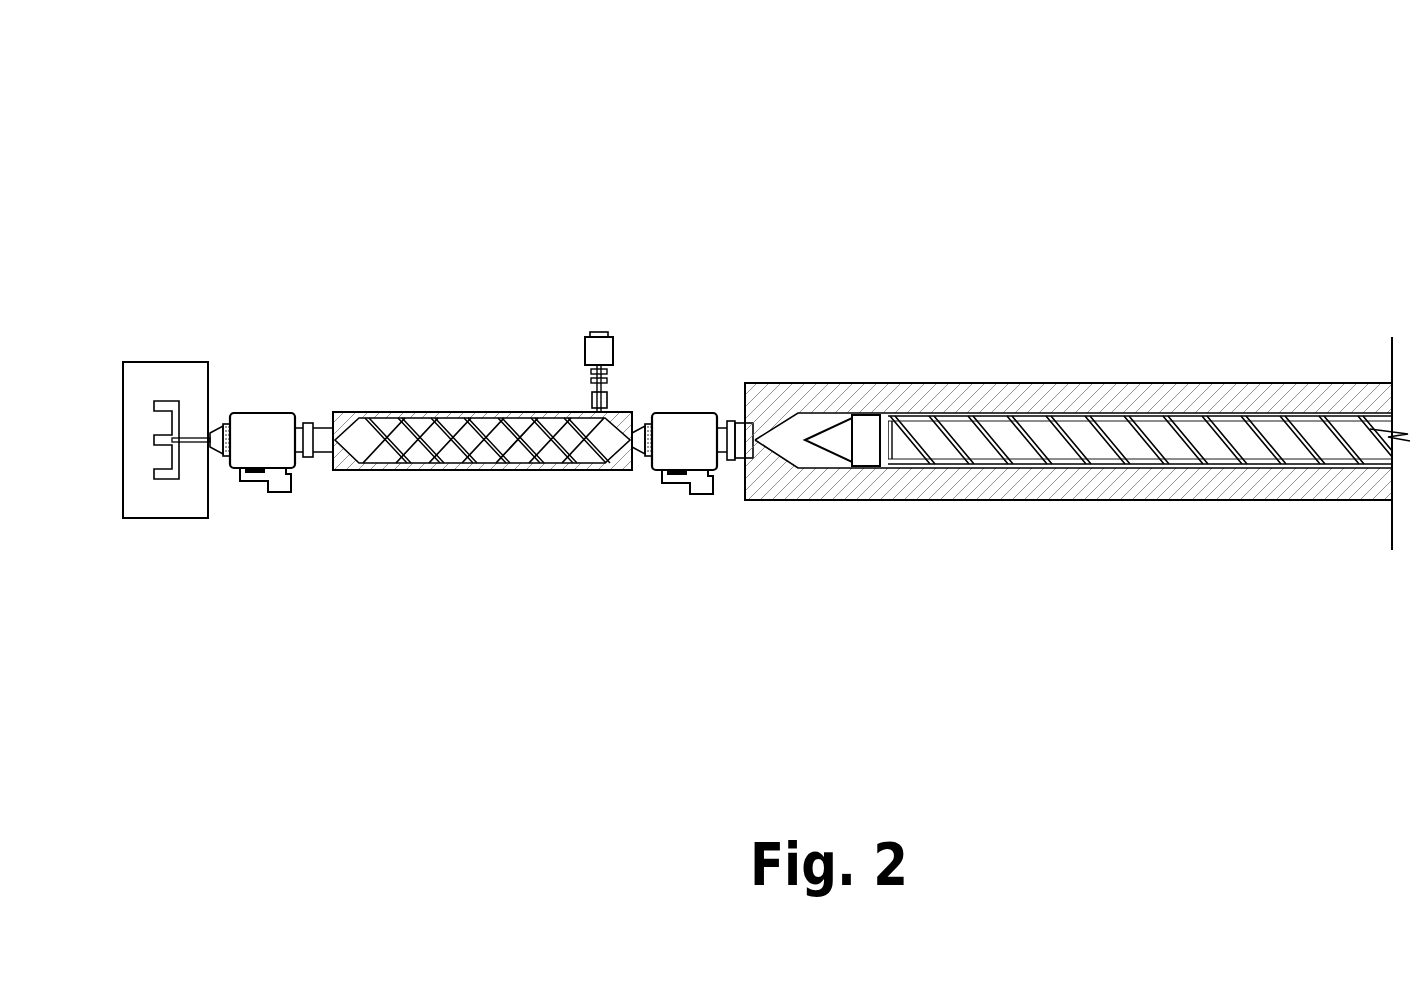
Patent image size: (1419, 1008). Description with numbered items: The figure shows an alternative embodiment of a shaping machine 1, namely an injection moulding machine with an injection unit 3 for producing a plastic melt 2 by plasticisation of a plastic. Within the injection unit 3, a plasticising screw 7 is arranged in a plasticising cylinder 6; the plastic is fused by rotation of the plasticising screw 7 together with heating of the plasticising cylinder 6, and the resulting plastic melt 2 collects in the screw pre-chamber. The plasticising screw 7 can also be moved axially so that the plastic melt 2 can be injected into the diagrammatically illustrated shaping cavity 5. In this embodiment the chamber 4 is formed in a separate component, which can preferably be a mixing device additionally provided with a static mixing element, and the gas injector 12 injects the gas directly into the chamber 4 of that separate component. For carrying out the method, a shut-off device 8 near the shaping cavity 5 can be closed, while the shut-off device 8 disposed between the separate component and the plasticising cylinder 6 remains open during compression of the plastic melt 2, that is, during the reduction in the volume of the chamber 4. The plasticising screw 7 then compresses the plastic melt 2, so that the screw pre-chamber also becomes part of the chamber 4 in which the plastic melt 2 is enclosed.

The shaping machine 1 is at (257, 99).
The plastic melt 2 is at (805, 455).
The injection unit 3 is at (1169, 189).
The chamber 4 is at (478, 405).
The shaping cavity 5 is at (186, 355).
The plasticising cylinder 6 is at (1075, 512).
The plasticising screw 7 is at (1155, 434).
The shut-off device 8 is at (261, 500).
The gas injector 12 is at (615, 324).